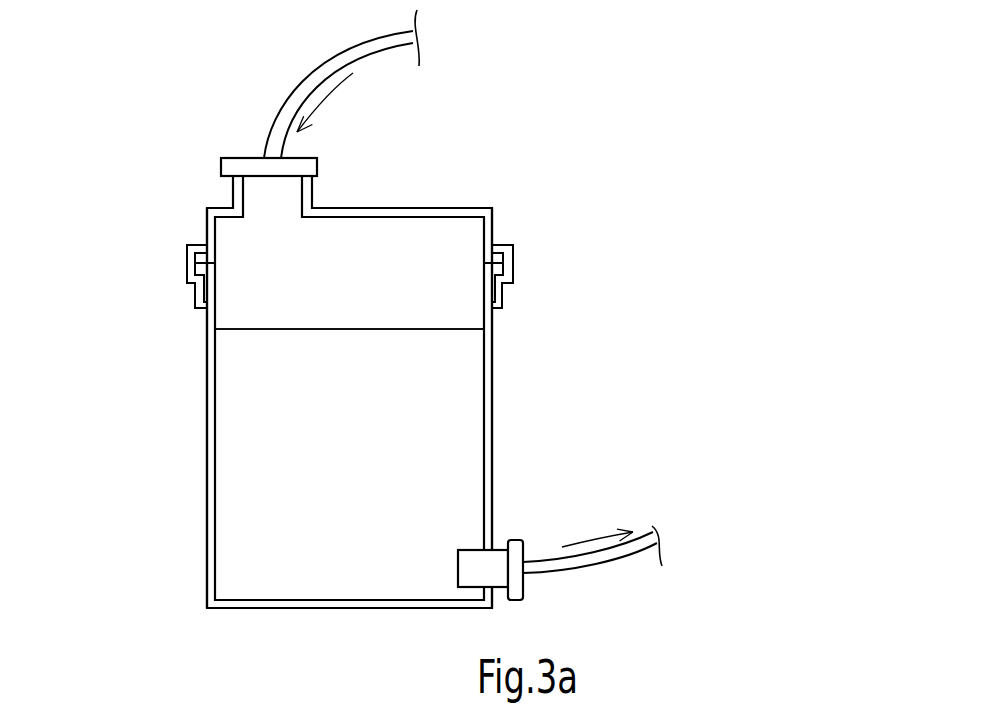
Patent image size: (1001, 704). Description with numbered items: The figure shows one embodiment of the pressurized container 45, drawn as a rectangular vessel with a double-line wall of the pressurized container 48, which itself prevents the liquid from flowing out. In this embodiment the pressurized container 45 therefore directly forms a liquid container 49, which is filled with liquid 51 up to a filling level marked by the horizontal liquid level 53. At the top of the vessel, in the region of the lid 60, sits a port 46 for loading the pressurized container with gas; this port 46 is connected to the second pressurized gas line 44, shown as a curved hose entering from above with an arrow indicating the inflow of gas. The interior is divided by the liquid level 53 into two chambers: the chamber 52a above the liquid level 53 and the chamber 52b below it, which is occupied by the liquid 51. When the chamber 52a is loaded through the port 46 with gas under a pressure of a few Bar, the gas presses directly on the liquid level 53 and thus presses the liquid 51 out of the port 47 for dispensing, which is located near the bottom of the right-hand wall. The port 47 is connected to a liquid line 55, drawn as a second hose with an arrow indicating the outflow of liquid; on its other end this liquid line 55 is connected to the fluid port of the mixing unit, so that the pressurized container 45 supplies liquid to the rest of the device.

The second pressurized gas line 44 is at (313, 65).
The pressurized container 45 is at (502, 390).
The port for loading 46 is at (325, 169).
The port for dispensing 47 is at (497, 547).
The wall of the pressurized container 48 is at (493, 440).
The liquid container 49 is at (205, 412).
The liquid 51 is at (362, 463).
The chamber 52a is at (371, 279).
The chamber 52b is at (369, 535).
The liquid level 53 is at (405, 329).
The liquid line 55 is at (603, 560).
The lid 60 is at (420, 207).